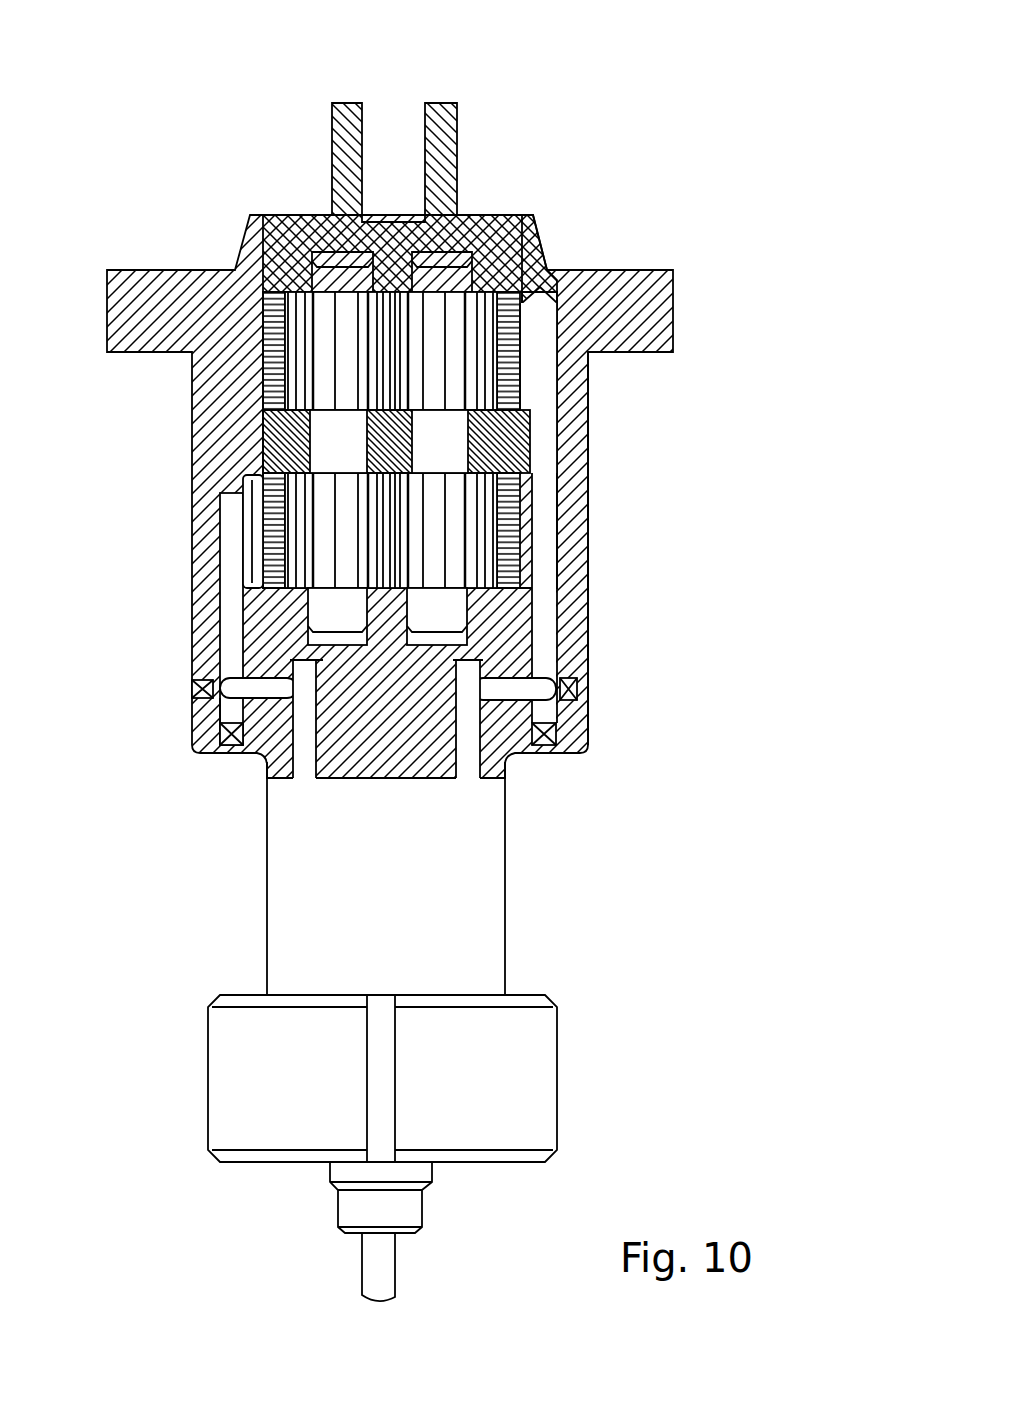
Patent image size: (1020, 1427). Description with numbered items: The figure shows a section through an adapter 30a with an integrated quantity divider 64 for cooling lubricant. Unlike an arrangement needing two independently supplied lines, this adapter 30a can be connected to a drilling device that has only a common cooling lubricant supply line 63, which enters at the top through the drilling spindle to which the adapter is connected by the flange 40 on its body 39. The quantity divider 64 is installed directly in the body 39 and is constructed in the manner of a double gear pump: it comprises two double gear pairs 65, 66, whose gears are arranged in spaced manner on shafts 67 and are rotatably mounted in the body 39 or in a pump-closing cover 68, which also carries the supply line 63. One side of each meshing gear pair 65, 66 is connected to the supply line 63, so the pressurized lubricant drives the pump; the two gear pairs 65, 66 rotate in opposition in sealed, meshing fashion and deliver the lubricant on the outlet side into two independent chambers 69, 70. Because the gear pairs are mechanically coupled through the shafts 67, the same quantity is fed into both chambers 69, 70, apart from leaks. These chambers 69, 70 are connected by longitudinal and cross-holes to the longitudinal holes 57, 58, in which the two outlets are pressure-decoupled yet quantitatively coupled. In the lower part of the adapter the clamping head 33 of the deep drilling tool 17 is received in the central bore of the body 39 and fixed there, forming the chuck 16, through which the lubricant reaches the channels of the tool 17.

The adapter 30a is at (652, 168).
The common cooling lubricant supply line 63 is at (398, 118).
The pump-closing cover 68 is at (289, 232).
The body 39 is at (532, 236).
The flange 40 is at (660, 305).
The chamber 69 is at (547, 355).
The double gear pair 65 is at (447, 357).
The shaft 67 is at (447, 457).
The quantity divider 64 is at (605, 510).
The chamber 70 is at (250, 527).
The double gear pair 66 is at (452, 552).
The longitudinal hole 58 is at (300, 768).
The longitudinal hole 57 is at (470, 768).
The chuck 16 is at (602, 1102).
The clamping head 33 is at (420, 1172).
The deep drilling tool 17 is at (385, 1265).